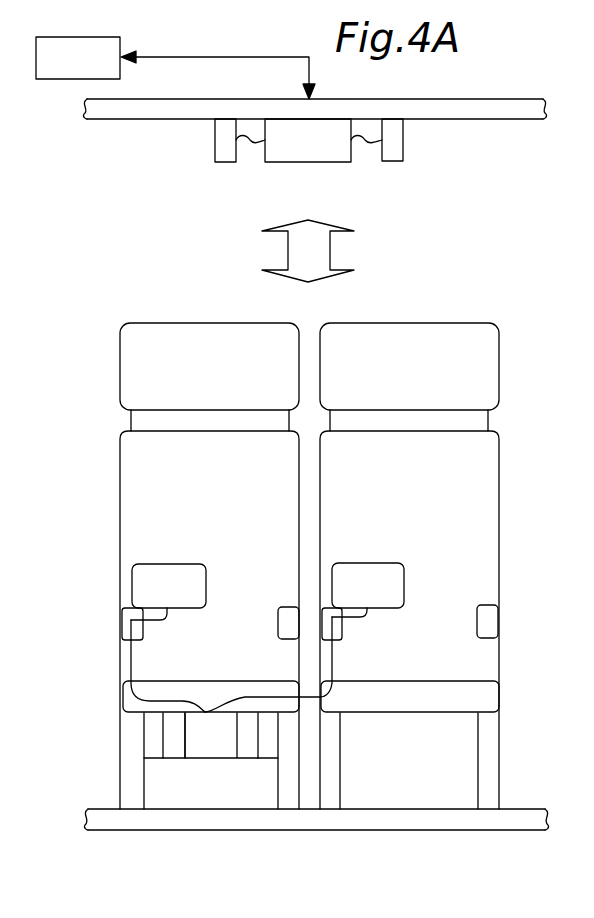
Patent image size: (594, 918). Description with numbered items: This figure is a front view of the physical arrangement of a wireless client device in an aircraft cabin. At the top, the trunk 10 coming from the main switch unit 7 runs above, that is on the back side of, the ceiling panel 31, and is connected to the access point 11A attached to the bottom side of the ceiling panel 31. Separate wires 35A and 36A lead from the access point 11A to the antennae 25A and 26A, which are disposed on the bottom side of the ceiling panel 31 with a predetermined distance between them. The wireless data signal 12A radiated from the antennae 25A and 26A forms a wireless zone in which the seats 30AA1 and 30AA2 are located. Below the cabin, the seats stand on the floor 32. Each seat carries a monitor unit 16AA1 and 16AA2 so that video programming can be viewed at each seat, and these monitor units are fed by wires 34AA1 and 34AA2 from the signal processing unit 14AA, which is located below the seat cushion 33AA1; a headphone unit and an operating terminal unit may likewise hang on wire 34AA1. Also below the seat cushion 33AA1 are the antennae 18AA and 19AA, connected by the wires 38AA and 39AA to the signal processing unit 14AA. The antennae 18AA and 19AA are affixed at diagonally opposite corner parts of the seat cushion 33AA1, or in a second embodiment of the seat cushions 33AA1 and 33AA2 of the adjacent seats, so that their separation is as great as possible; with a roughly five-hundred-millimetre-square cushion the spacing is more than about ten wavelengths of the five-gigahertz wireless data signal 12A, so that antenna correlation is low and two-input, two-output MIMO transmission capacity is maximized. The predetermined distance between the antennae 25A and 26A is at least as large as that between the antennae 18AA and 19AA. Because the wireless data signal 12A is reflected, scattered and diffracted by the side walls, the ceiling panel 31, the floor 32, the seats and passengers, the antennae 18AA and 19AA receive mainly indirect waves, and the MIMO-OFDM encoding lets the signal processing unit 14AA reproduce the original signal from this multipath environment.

The main switch unit 7 is at (70, 80).
The trunk 10 is at (172, 58).
The ceiling panel 31 is at (432, 98).
The antenna 25A is at (214, 142).
The access point 11A is at (308, 162).
The antenna 26A is at (404, 139).
The wire 35A is at (250, 146).
The wire 36A is at (367, 146).
The wireless data signal 12A is at (330, 250).
The seat 30AA1 is at (208, 323).
The seat 30AA2 is at (408, 323).
The monitor unit 16AA1 is at (167, 564).
The monitor unit 16AA2 is at (367, 563).
The wire 34AA1 is at (132, 653).
The wire 34AA2 is at (332, 657).
The seat cushion 33AA1 is at (163, 682).
The seat cushion 33AA2 is at (458, 681).
The antenna 18AA is at (158, 758).
The wire 38AA is at (166, 731).
The signal processing unit 14AA is at (210, 758).
The wire 39AA is at (238, 731).
The antenna 19AA is at (267, 758).
The floor 32 is at (468, 830).